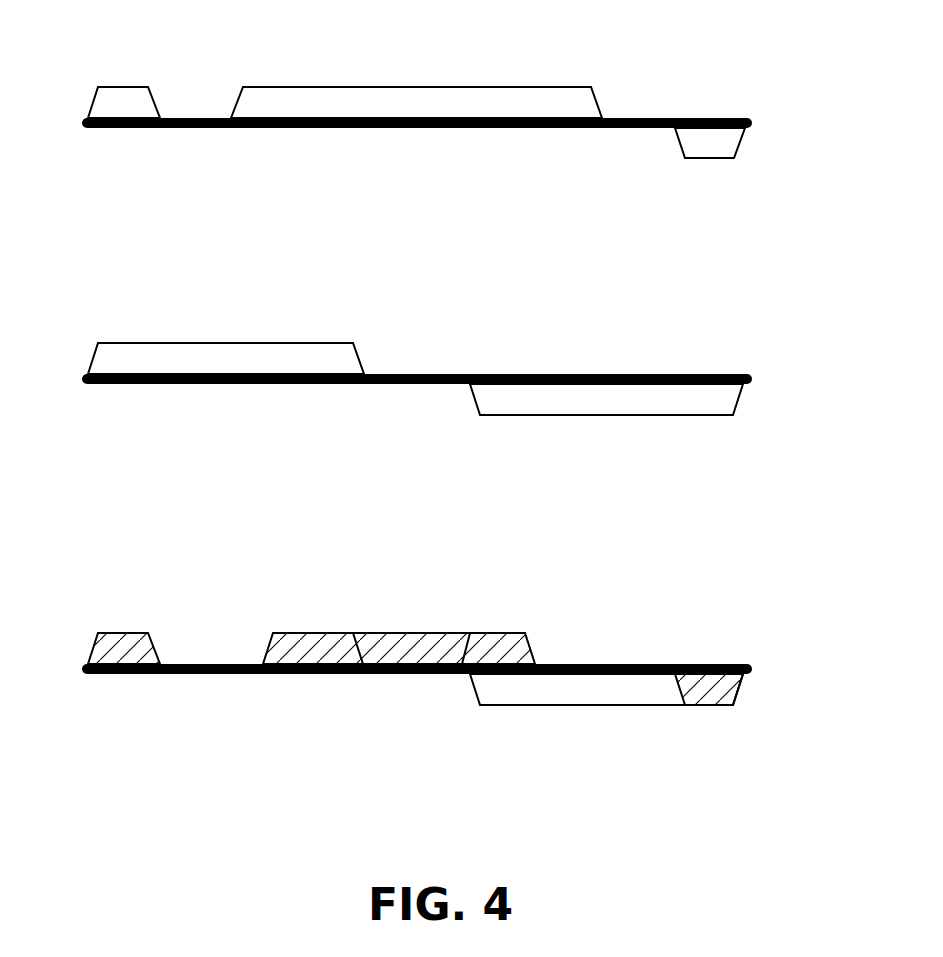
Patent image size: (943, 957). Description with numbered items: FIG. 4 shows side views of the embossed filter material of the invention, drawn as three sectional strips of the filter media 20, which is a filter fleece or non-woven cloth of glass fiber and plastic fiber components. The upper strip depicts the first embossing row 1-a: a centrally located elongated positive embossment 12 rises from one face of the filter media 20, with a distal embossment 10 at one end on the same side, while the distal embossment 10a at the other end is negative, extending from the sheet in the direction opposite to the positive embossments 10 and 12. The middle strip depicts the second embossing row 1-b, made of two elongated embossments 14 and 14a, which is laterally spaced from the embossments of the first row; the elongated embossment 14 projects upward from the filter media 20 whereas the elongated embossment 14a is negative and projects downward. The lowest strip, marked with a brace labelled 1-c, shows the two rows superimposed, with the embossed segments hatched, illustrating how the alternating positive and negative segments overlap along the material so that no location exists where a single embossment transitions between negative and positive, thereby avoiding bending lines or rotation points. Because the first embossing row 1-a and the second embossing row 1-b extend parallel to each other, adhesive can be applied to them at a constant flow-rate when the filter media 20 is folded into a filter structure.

The distal embossment 10 is at (121, 98).
The elongated positive embossment 12 is at (540, 101).
The filter media 20 is at (620, 128).
The negative distal embossment 10a is at (705, 143).
The elongated embossment 14 is at (128, 357).
The negative elongated embossment 14a is at (708, 400).
The first embossing row 1-a is at (430, 114).
The second embossing row 1-b is at (437, 489).
The third process stage 1-c is at (650, 718).